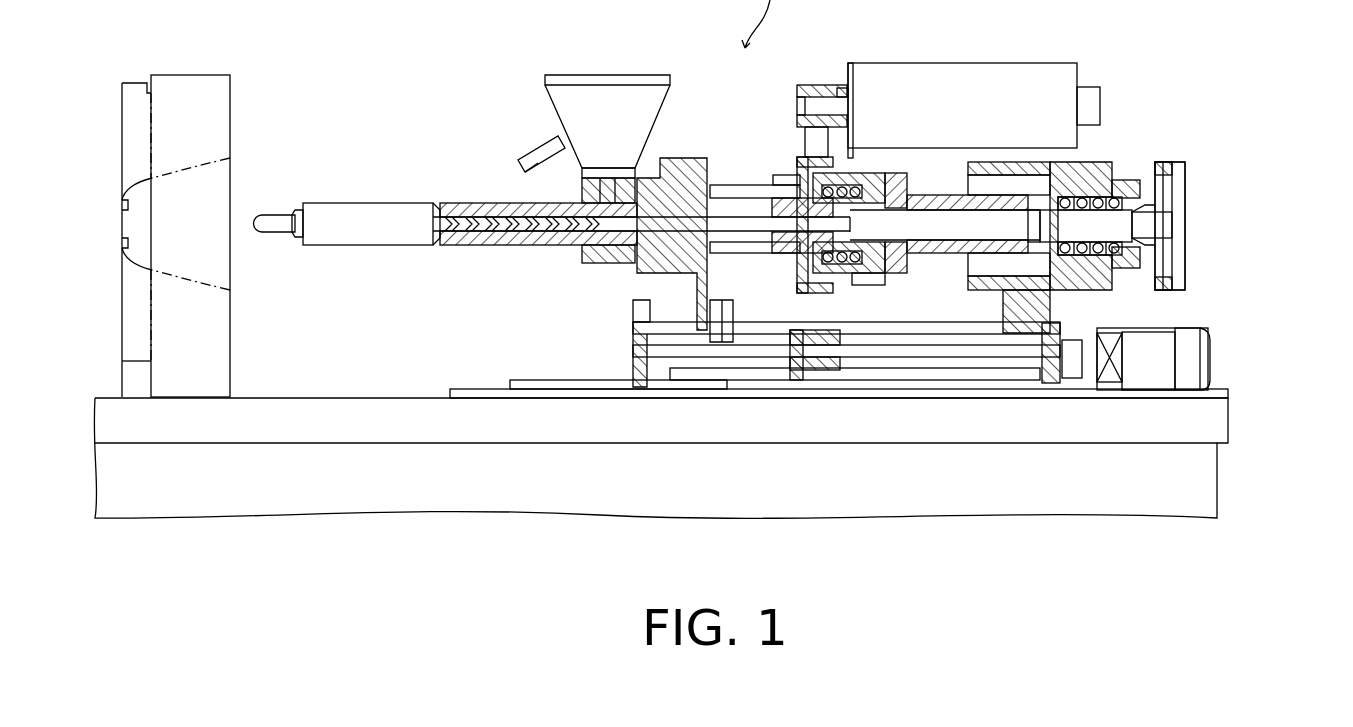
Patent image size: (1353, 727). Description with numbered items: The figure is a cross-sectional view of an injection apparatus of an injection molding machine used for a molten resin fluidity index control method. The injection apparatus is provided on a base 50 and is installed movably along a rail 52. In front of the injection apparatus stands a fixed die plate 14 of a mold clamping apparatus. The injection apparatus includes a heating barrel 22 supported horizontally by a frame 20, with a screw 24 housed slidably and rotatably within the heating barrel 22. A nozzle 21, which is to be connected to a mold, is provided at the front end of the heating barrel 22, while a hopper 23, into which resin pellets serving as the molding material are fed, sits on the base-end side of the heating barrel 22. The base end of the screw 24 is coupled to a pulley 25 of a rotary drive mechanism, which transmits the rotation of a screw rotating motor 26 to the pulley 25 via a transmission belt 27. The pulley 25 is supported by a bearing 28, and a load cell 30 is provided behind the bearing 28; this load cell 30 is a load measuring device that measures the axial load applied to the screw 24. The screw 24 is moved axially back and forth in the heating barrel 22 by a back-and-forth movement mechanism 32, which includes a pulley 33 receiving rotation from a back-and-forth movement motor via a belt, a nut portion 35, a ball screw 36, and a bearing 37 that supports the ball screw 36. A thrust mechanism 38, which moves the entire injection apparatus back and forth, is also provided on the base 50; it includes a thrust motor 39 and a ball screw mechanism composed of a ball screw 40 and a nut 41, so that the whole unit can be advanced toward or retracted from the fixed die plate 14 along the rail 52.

The fixed die plate 14 is at (215, 100).
The frame 20 is at (688, 165).
The nozzle 21 is at (284, 214).
The heating barrel 22 is at (382, 217).
The hopper 23 is at (608, 95).
The screw 24 is at (483, 226).
The pulley 25 is at (790, 293).
The screw rotating motor 26 is at (995, 80).
The transmission belt 27 is at (815, 138).
The bearing 28 is at (862, 186).
The load cell 30 is at (900, 175).
The back-and-forth movement mechanism 32 is at (1203, 138).
The pulley 33 is at (1180, 180).
The nut portion 35 is at (985, 253).
The ball screw 36 is at (987, 223).
The bearing 37 is at (1115, 262).
The thrust mechanism 38 is at (1248, 359).
The thrust motor 39 is at (1147, 360).
The ball screw 40 is at (903, 357).
The nut 41 is at (815, 370).
The base 50 is at (372, 413).
The rail 52 is at (548, 389).